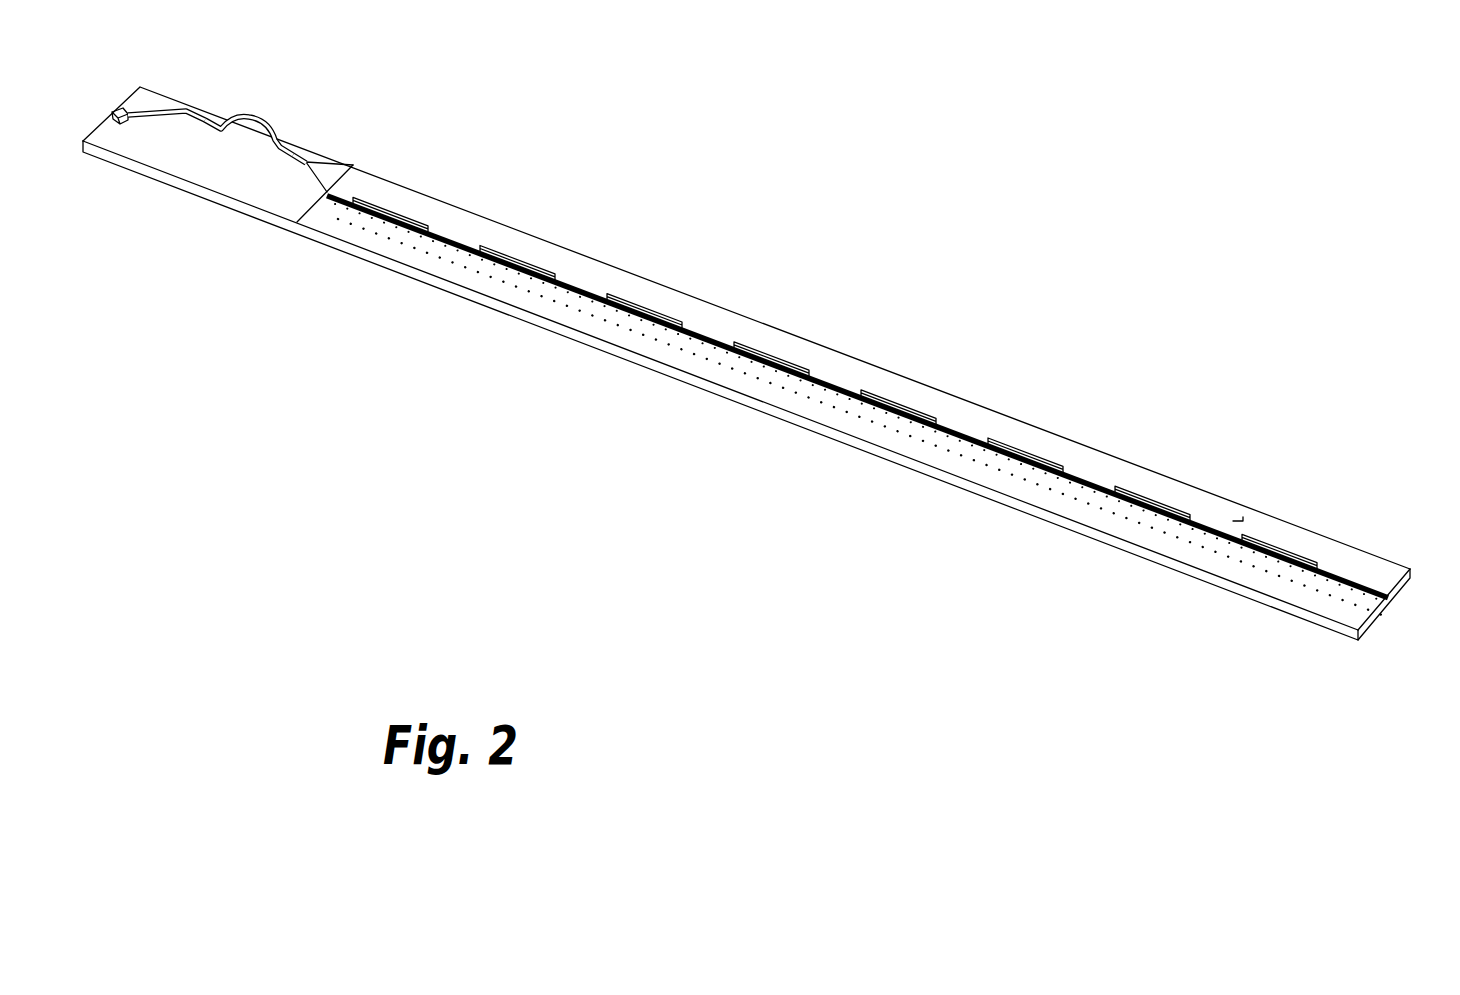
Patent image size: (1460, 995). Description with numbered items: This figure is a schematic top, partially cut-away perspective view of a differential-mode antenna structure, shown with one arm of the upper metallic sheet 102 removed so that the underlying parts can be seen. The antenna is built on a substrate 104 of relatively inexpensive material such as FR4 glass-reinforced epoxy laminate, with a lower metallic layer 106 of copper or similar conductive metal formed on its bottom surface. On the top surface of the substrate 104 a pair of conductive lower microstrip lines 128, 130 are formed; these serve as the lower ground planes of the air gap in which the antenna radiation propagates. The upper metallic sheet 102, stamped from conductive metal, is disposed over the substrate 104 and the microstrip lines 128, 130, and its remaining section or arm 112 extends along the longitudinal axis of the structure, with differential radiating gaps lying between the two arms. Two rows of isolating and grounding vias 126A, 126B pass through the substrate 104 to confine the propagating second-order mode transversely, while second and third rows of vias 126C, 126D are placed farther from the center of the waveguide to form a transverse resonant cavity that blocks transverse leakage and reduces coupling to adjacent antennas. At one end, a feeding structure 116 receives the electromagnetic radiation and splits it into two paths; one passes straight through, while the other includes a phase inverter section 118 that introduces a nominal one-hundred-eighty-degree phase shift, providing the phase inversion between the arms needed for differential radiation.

The upper metallic sheet 102 is at (695, 305).
The substrate 104 is at (1194, 570).
The lower metallic layer 106 is at (1333, 632).
The section or arm of upper metallic sheet 112 is at (1243, 520).
The feeding structure 116 is at (284, 113).
The phase inverter section 118 is at (254, 115).
The isolating and grounding vias 126A is at (658, 333).
The isolating and grounding vias 126B is at (807, 373).
The second row of vias 126C is at (492, 281).
The third row of vias 126D is at (1053, 471).
The lower microstrip line 128 is at (1391, 600).
The lower microstrip line 130 is at (1378, 620).